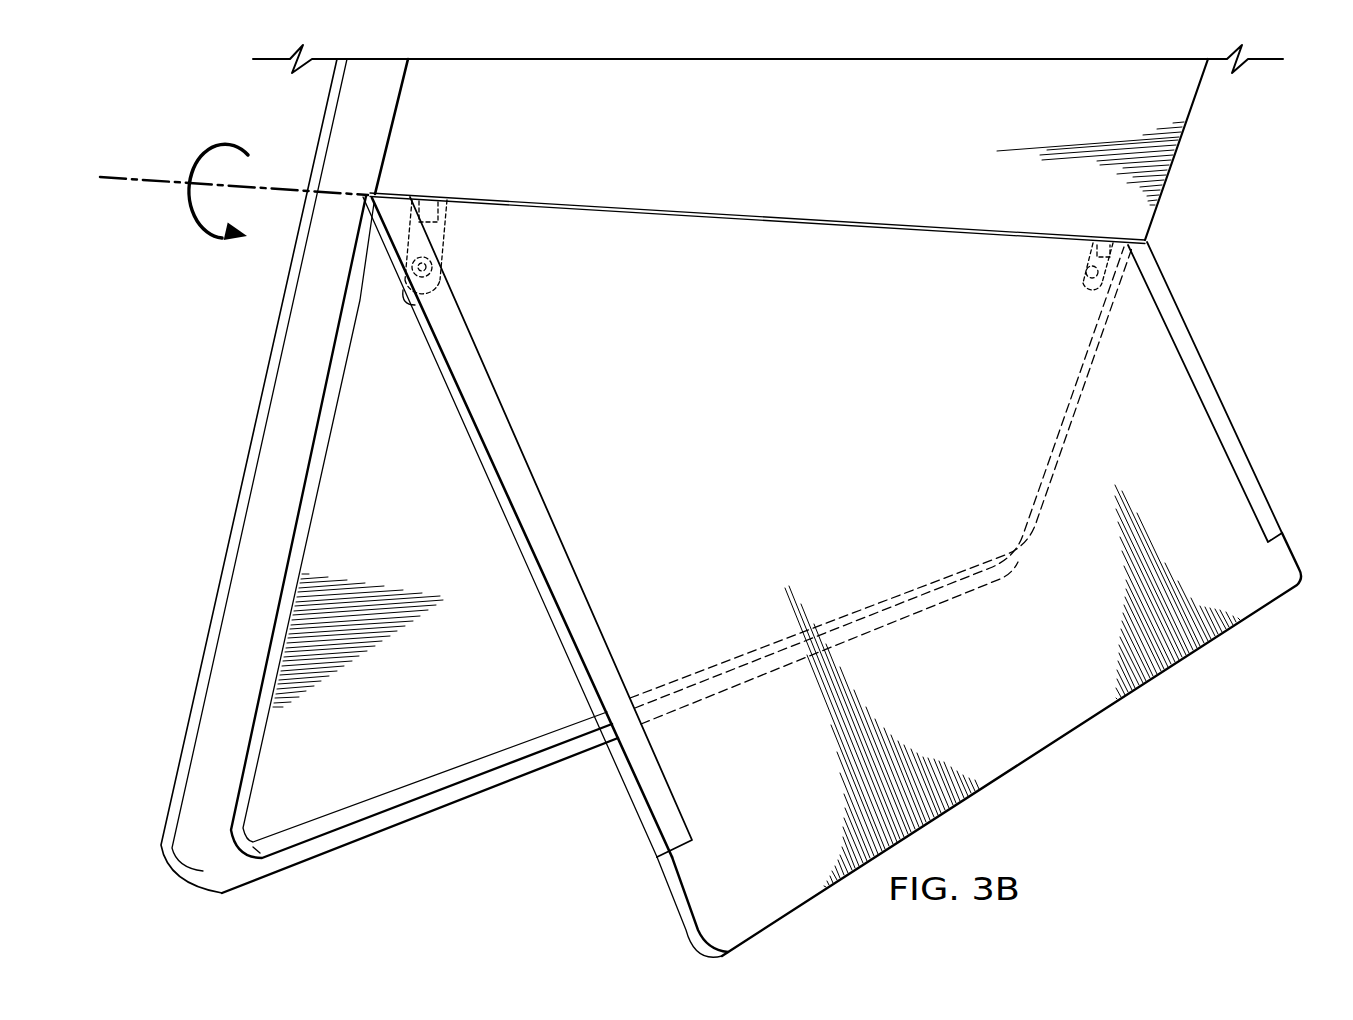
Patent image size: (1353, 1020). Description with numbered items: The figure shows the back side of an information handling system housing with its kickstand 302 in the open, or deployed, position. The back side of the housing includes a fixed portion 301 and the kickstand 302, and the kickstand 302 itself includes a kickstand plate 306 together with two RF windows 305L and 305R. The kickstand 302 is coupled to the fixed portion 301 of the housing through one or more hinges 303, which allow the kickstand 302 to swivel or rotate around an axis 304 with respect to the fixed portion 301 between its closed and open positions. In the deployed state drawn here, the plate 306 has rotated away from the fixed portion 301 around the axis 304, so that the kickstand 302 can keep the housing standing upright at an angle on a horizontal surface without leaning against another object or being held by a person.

The fixed portion 301 is at (836, 169).
The kickstand 302 is at (1046, 750).
The hinge 303 is at (449, 240).
The axis 304 is at (695, 219).
The RF window 305R is at (539, 523).
The RF window 305L is at (1210, 397).
The kickstand plate 306 is at (870, 466).